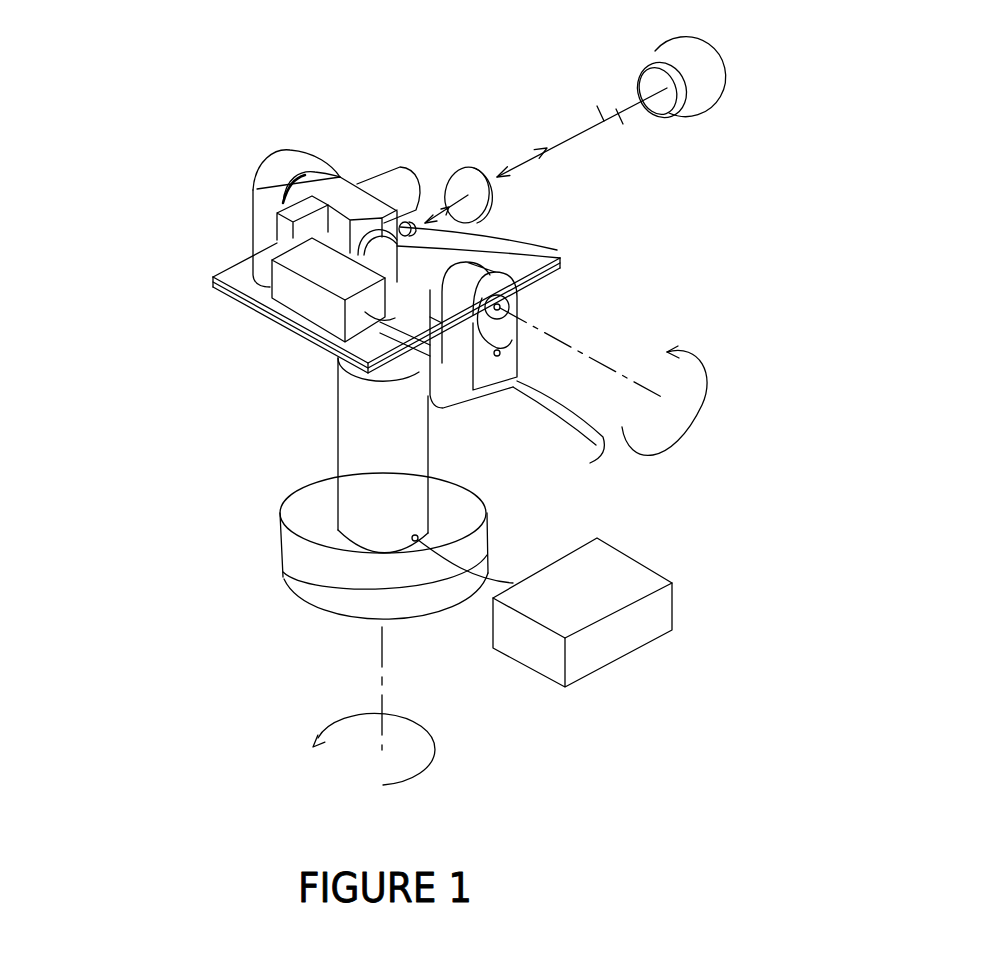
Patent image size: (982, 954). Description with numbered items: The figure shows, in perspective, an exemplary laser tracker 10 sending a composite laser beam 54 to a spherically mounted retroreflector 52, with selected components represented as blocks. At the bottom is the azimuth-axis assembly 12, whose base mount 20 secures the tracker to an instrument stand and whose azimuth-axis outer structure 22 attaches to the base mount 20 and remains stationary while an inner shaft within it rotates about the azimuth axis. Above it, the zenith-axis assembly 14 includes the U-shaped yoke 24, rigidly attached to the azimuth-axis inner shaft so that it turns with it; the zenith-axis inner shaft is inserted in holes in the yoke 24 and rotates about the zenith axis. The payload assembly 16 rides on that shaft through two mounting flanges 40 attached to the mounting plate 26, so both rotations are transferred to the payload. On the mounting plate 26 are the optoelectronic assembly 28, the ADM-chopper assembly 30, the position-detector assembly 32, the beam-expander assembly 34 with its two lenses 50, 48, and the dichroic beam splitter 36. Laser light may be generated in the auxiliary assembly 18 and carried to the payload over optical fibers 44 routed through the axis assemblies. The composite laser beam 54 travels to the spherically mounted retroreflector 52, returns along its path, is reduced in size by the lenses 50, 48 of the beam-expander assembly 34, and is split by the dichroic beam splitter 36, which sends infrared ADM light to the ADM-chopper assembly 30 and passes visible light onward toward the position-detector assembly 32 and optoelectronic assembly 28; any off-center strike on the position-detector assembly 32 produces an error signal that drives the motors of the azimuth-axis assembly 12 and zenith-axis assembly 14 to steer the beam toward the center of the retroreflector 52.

The laser tracker 10 is at (168, 38).
The azimuth-axis assembly 12 is at (270, 512).
The zenith-axis assembly 14 is at (227, 158).
The payload assembly 16 is at (218, 253).
The auxiliary assembly 18 is at (675, 598).
The base mount 20 is at (307, 603).
The azimuth-axis outer structure 22 is at (353, 458).
The yoke 24 is at (287, 153).
The mounting plate 26 is at (213, 277).
The optoelectronic assembly 28 is at (297, 327).
The ADM-chopper assembly 30 is at (340, 177).
The position-detector assembly 32 is at (560, 253).
The beam-expander assembly 34 is at (497, 67).
The dichroic beam splitter 36 is at (513, 233).
The mounting flanges 40 is at (255, 190).
The optical fibers 44 is at (513, 583).
The lens 48 is at (403, 220).
The lens 50 is at (477, 168).
The spherically mounted retroreflector 52 is at (729, 75).
The composite laser beam 54 is at (527, 163).